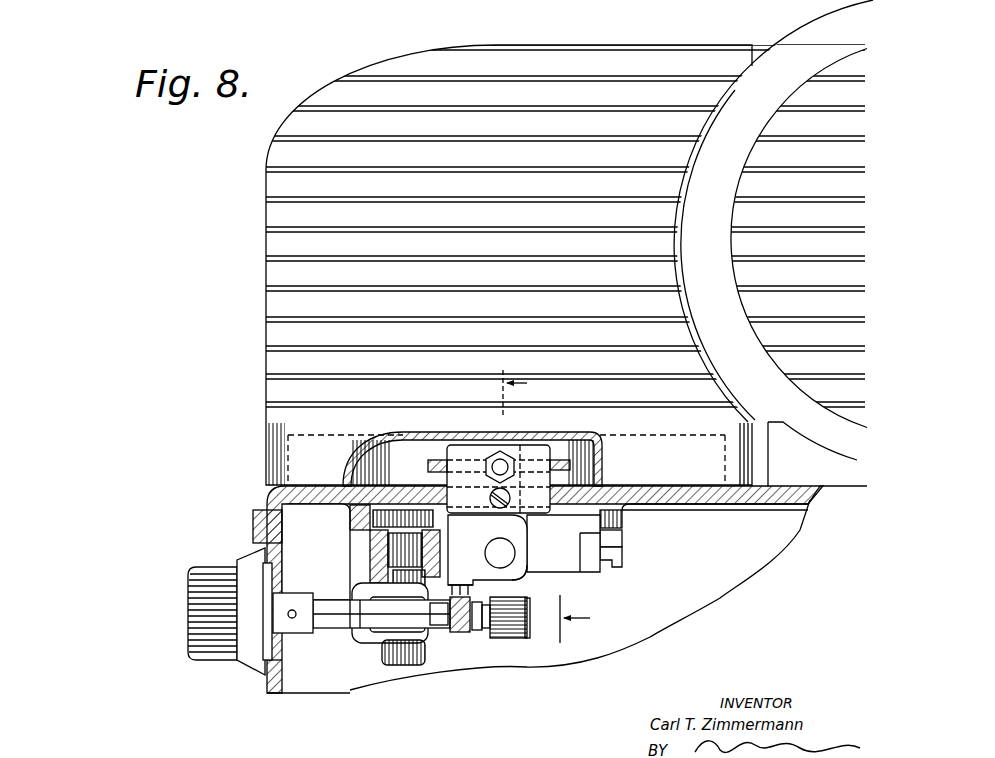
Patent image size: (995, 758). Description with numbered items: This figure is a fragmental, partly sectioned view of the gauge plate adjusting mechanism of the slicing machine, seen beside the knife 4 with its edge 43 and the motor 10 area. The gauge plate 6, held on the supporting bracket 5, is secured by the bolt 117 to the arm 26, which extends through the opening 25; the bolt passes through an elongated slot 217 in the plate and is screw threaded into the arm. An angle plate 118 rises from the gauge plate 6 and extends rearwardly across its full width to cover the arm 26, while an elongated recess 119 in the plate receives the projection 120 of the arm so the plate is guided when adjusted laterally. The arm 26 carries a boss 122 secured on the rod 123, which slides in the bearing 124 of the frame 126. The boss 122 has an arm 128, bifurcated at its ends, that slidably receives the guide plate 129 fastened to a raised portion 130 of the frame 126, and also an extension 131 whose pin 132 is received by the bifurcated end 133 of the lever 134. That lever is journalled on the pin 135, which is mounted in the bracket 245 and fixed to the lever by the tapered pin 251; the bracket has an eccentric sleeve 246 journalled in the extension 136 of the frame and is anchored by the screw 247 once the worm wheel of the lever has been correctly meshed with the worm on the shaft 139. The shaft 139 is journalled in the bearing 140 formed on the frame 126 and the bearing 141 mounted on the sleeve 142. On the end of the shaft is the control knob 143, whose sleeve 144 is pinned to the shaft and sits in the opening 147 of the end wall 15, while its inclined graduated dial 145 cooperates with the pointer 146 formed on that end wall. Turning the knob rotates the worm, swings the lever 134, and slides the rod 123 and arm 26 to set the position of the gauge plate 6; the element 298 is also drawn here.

The knife 4 is at (768, 50).
The blade edge 43 is at (822, 88).
The supporting bracket 5 is at (340, 510).
The gauge plate 6 is at (260, 301).
The motor 10 is at (546, 505).
The end wall 15 is at (270, 693).
The opening 25 is at (447, 485).
The arm 26 is at (542, 497).
The bolt 117 is at (497, 458).
The angle plate 118 is at (288, 425).
The elongated recess 119 is at (567, 467).
The projection 120 is at (547, 437).
The boss 122 is at (529, 630).
The rod 123 is at (520, 575).
The bearing 124 is at (563, 557).
The frame 126 is at (626, 515).
The arm 128 is at (600, 578).
The guide plate 129 is at (617, 552).
The raised portion 130 is at (615, 538).
The extension 131 is at (460, 555).
The pin 132 is at (492, 624).
The bifurcated end 133 is at (478, 617).
The lever 134 is at (437, 615).
The pin 135 is at (397, 580).
The extension 136 is at (367, 543).
The shaft 139 is at (323, 627).
The bearing 140 is at (355, 622).
The bearing 141 is at (463, 627).
The sleeve 142 is at (507, 639).
The control knob 143 is at (188, 587).
The sleeve 144 is at (250, 660).
The graduated dial 145 is at (242, 562).
The pointer 146 is at (260, 543).
The opening 147 is at (270, 677).
The elongated slot 217 is at (523, 457).
The bracket 245 is at (377, 650).
The eccentric sleeve 246 is at (385, 562).
The screw 247 is at (377, 487).
The tapered pin 251 is at (345, 622).
The lower gear 298 is at (417, 667).